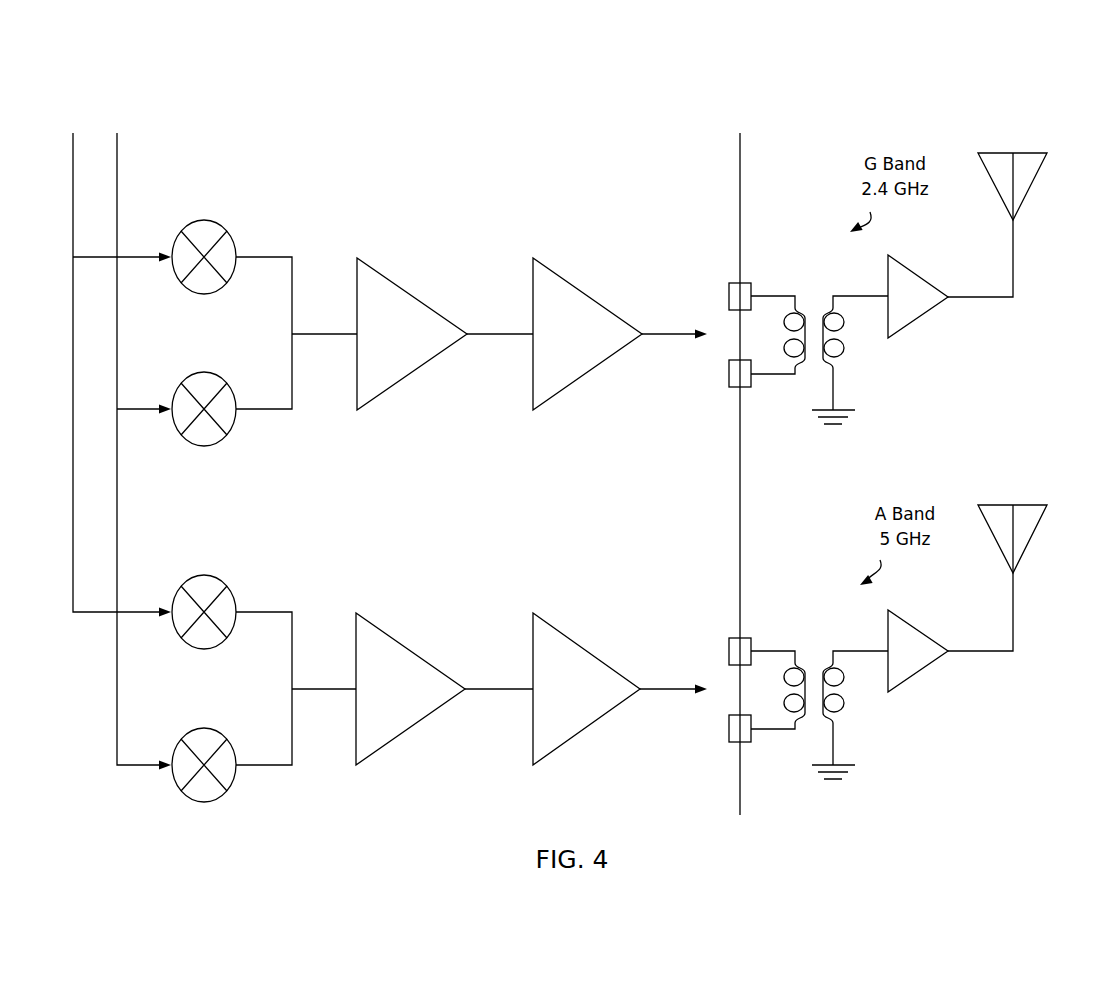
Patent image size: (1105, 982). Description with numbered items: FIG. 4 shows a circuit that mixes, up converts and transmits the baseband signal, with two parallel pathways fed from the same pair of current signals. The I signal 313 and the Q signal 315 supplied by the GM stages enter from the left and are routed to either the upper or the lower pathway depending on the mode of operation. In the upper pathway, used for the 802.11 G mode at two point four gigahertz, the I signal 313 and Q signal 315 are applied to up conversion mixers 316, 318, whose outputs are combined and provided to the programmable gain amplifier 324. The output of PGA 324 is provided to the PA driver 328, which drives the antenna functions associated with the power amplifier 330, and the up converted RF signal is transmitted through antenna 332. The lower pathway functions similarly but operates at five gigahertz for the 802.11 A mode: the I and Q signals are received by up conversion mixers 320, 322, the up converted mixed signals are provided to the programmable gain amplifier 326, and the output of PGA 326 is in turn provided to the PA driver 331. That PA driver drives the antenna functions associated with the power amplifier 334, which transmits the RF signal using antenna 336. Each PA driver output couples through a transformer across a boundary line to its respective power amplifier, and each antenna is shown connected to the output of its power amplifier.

The I signal 313 is at (84, 140).
The Q signal 315 is at (127, 568).
The up conversion mixer 316 is at (214, 221).
The up conversion mixer 318 is at (208, 373).
The up conversion mixer 320 is at (212, 576).
The up conversion mixer 322 is at (213, 729).
The programmable gain amplifier 324 is at (392, 278).
The programmable gain amplifier 326 is at (405, 647).
The PA driver 328 is at (585, 290).
The PA driver 331 is at (578, 647).
The power amplifier 330 is at (918, 273).
The power amplifier 334 is at (918, 626).
The antenna 332 is at (1047, 153).
The antenna 336 is at (1047, 505).